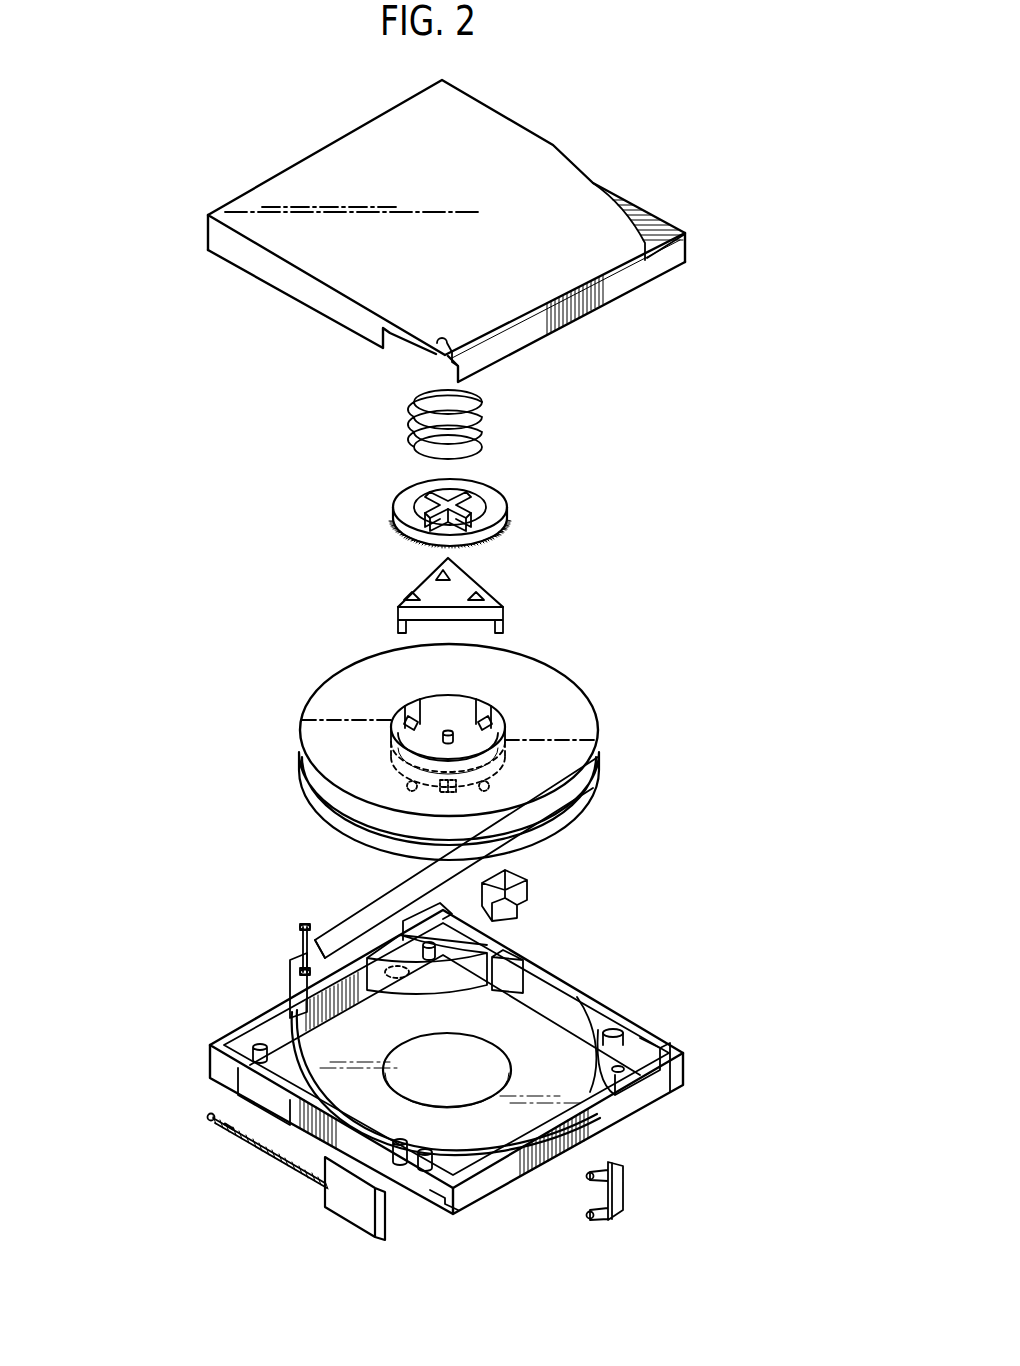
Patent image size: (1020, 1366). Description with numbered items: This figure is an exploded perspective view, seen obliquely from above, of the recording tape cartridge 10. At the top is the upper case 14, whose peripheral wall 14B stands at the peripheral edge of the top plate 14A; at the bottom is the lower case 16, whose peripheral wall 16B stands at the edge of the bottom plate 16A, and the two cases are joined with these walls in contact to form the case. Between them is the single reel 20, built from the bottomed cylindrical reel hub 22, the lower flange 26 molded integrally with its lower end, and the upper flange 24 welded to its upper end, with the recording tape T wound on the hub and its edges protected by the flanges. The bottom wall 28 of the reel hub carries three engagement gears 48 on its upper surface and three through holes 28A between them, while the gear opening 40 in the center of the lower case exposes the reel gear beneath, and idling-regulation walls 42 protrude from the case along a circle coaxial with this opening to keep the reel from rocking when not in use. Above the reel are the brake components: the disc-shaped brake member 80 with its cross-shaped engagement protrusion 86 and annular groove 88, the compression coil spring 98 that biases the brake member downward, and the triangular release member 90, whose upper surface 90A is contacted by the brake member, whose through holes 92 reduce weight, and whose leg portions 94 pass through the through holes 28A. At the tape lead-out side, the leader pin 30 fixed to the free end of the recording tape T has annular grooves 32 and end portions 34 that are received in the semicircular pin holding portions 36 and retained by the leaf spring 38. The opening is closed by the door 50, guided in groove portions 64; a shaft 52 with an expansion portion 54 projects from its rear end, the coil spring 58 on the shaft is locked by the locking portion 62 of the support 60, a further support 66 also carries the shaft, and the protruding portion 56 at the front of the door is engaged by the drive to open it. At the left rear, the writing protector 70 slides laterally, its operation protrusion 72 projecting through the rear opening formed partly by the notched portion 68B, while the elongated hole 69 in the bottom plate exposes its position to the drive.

The recording tape cartridge 10 is at (677, 142).
The upper case 14 is at (452, 231).
The top plate 14A is at (538, 167).
The peripheral wall 14B is at (280, 272).
The lower case 16 is at (436, 1071).
The bottom plate 16A is at (429, 1084).
The peripheral wall 16B is at (222, 1070).
The reel 20 is at (455, 731).
The reel hub 22 is at (421, 697).
The upper flange 24 is at (560, 690).
The lower flange 26 is at (598, 782).
The bottom wall 28 is at (430, 752).
The through holes 28A is at (452, 712).
The leader pin 30 is at (271, 941).
The annular groove 32 is at (300, 926).
The end portions 34 is at (304, 924).
The pin holding portions 36 is at (438, 352).
The leaf spring 38 is at (622, 1192).
The gear opening 40 is at (470, 1046).
The idling-regulation walls 42 is at (480, 1015).
The engagement gears 48 is at (410, 700).
The door 50 is at (304, 1184).
The shaft 52 is at (270, 1150).
The expansion portion 54 is at (208, 1120).
The protruding portion 56 is at (350, 1222).
The coil spring 58 is at (232, 1132).
The support 60 is at (300, 1078).
The locking portion 62 is at (262, 1046).
The groove portions 64 is at (432, 1185).
The support 66 is at (238, 1086).
The notched portion 68B is at (420, 932).
The elongated hole 69 is at (397, 980).
The writing protector 70 is at (494, 894).
The operation protrusion 72 is at (505, 880).
The brake member 80 is at (457, 494).
The engagement protrusion 86 is at (470, 490).
The annular groove 88 is at (418, 502).
The release member 90 is at (447, 589).
The upper surface 90A is at (430, 582).
The through holes 92 is at (452, 574).
The leg portions 94 is at (398, 628).
The compression coil spring 98 is at (478, 402).
The recording tape T is at (330, 937).